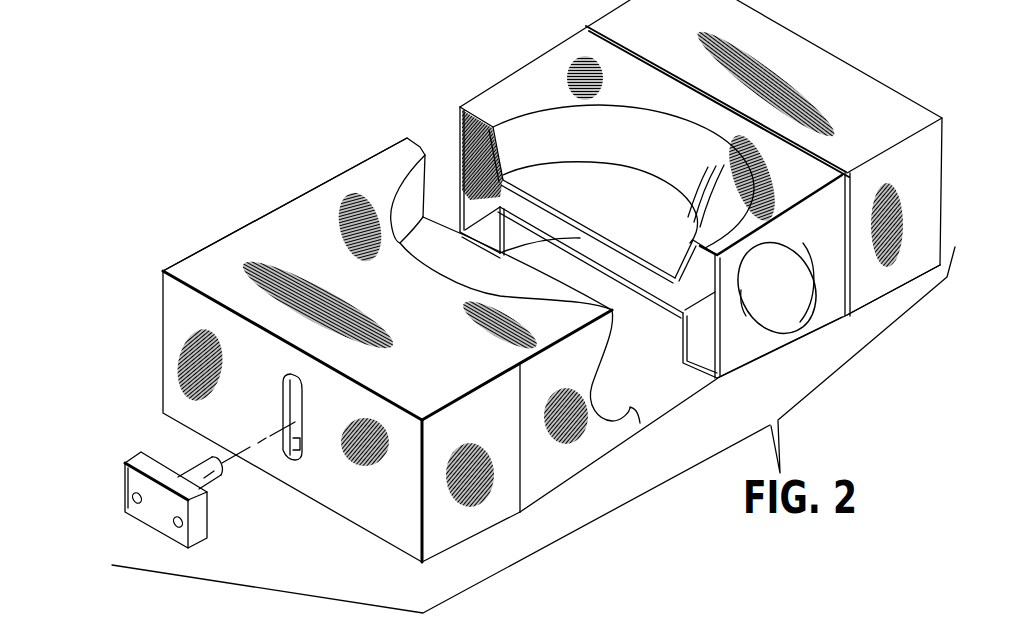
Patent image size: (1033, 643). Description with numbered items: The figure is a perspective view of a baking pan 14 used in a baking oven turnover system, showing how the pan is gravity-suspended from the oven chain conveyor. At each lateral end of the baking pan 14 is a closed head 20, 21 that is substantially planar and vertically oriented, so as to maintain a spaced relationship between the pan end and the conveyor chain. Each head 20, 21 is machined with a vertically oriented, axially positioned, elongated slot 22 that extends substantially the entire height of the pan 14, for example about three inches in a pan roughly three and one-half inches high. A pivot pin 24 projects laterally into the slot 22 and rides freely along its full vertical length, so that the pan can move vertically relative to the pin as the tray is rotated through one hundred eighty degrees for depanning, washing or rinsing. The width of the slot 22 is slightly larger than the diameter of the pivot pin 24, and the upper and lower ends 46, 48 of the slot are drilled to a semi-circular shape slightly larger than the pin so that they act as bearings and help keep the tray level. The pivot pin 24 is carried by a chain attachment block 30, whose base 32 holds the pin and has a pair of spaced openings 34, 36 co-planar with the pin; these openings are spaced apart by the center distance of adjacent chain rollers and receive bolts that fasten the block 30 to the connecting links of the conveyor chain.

The baking pan 14 is at (358, 160).
The head 20 is at (168, 305).
The head 21 is at (777, 26).
The elongated slot 22 is at (300, 457).
The pivot pin 24 is at (205, 480).
The chain attachment block 30 is at (125, 480).
The base 32 is at (125, 490).
The opening 34 is at (129, 501).
The opening 36 is at (174, 525).
The upper end of slot 46 is at (292, 380).
The lower end of slot 48 is at (295, 462).